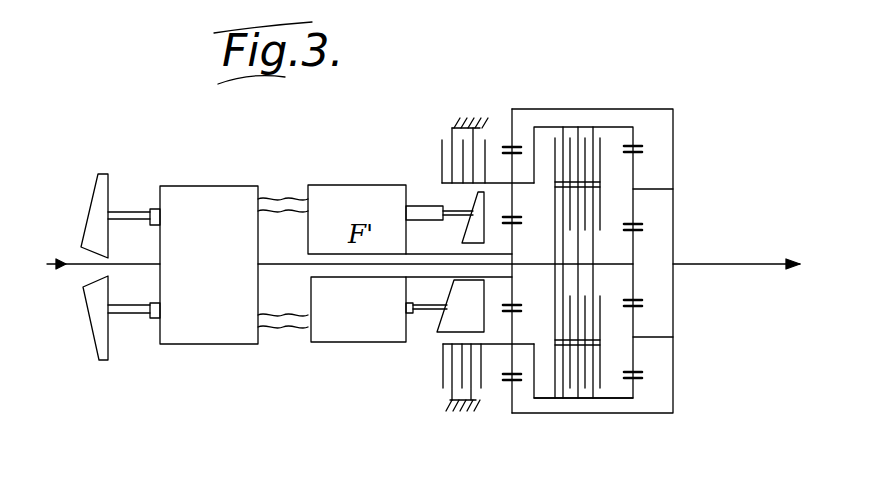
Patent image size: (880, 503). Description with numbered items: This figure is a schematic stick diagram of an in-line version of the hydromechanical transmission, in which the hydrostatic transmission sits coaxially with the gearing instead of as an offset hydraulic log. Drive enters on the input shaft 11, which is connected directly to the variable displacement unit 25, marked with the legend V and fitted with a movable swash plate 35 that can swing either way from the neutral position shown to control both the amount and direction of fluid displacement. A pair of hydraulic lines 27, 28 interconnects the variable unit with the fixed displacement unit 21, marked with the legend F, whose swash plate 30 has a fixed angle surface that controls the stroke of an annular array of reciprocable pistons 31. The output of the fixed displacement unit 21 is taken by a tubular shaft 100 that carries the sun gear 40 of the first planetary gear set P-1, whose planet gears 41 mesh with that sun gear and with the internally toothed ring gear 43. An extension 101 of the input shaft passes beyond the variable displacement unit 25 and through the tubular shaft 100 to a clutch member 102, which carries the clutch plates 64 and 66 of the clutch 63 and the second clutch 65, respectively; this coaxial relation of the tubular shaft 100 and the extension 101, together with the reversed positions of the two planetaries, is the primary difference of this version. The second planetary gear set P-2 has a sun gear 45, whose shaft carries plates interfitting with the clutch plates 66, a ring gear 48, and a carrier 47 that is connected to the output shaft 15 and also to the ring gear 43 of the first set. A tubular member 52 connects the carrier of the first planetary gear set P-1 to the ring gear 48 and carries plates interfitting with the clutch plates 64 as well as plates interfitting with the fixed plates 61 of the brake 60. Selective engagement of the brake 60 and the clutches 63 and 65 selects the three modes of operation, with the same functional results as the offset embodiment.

The input shaft 11 is at (77, 268).
The movable swash plate 35 is at (100, 338).
The variable displacement unit 25 is at (218, 196).
The hydraulic line 28 is at (283, 199).
The hydraulic line 27 is at (282, 327).
The fixed displacement unit 21 is at (337, 342).
The input shaft extension 101 is at (337, 265).
The tubular shaft 100 is at (441, 253).
The reciprocable pistons 31 is at (402, 322).
The swash plate 30 is at (447, 323).
The brake 60 is at (463, 106).
The fixed plates 61 is at (487, 371).
The carrier 47 is at (675, 206).
The first planetary gear set P-1 is at (516, 98).
The planet gears 41 is at (508, 191).
The sun gear 40 is at (509, 243).
The ring gear 43 is at (512, 386).
The second planetary gear set P-2 is at (646, 129).
The clutch member 102 is at (553, 285).
The clutch plates 64 is at (602, 157).
The clutch plates 66 is at (600, 375).
The clutch 63 is at (606, 189).
The second clutch 65 is at (606, 357).
The tubular member 52 is at (552, 400).
The sun gear 45 is at (633, 276).
The ring gear 48 is at (634, 390).
The output shaft 15 is at (729, 259).